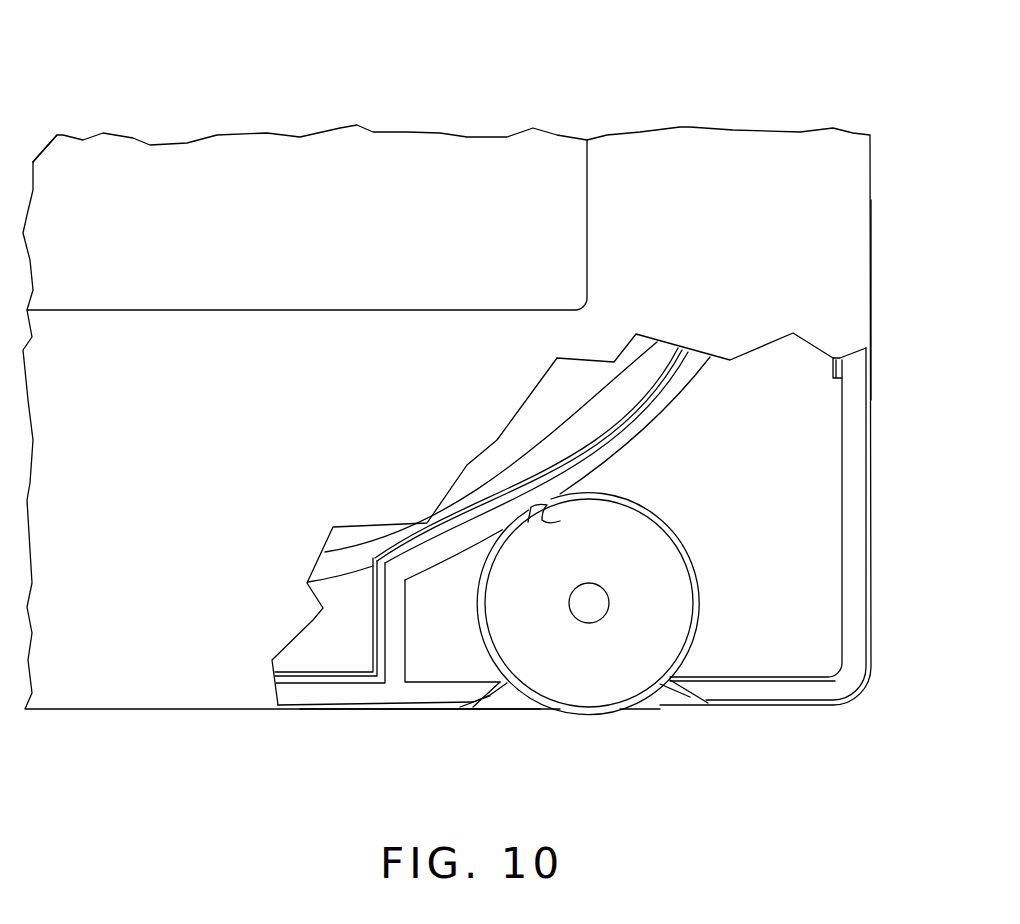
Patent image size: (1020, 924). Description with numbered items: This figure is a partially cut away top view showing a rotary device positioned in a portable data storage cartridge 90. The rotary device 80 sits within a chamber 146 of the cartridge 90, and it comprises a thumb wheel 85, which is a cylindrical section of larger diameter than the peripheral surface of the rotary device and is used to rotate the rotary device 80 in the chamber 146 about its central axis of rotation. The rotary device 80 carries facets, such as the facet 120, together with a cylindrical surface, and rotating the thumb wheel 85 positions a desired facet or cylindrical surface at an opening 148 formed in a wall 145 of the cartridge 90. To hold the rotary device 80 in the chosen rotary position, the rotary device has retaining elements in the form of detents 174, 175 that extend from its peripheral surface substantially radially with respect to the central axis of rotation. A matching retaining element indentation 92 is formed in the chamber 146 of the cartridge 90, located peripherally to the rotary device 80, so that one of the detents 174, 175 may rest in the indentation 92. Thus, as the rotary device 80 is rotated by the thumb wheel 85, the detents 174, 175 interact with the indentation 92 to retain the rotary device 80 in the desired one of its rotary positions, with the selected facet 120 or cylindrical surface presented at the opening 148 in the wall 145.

The portable data storage cartridge 90 is at (624, 79).
The detent 174 is at (533, 505).
The retaining element indentation 92 is at (552, 507).
The detent 175 is at (686, 548).
The thumb wheel 85 is at (700, 587).
The rotary device 80 is at (627, 604).
The chamber 146 is at (725, 677).
The wall 145 is at (767, 707).
The facet 120 is at (593, 690).
The opening 148 is at (540, 709).